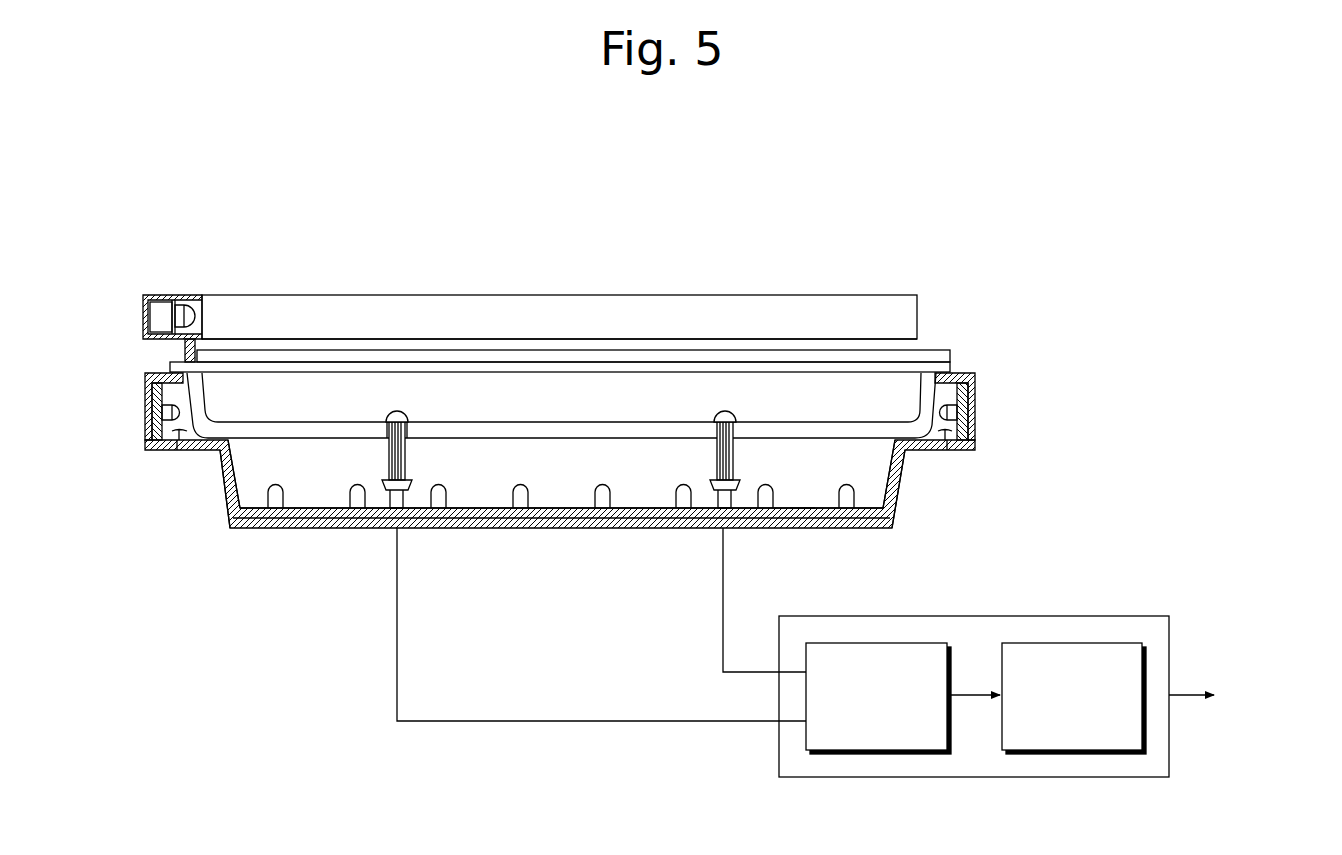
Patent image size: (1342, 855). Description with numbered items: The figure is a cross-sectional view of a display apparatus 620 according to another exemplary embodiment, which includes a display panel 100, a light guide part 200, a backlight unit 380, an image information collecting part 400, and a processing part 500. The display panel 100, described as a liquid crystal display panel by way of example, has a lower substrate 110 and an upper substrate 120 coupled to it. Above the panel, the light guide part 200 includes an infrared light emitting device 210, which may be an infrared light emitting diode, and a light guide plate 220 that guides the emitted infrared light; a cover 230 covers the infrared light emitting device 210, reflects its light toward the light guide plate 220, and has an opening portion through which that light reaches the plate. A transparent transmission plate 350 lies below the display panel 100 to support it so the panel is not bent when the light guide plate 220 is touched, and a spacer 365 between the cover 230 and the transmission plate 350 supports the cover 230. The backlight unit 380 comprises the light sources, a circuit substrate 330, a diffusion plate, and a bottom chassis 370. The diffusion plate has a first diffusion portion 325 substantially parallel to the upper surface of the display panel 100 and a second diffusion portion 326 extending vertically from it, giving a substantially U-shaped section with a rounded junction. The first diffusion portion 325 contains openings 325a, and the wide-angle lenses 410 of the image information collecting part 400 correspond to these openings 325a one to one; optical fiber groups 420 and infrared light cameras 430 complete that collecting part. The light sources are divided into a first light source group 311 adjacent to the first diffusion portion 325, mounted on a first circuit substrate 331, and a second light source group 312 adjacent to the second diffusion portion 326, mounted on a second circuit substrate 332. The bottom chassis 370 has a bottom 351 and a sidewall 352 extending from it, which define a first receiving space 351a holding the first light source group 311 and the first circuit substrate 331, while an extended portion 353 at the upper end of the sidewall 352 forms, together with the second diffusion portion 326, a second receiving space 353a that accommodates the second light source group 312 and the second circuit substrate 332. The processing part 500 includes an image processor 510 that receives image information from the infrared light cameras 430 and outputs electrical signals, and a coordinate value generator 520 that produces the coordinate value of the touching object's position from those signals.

The display panel 100 is at (1073, 305).
The lower substrate 110 is at (945, 357).
The upper substrate 120 is at (912, 347).
The light guide part 200 is at (305, 226).
The infrared light emitting device 210 is at (184, 312).
The light guide plate 220 is at (280, 312).
The cover 230 is at (163, 295).
The first light source group 311 is at (855, 500).
The second light source group 312 is at (165, 412).
The first diffusion portion 325 is at (553, 433).
The openings 325a is at (409, 430).
The second diffusion portion 326 is at (200, 395).
The circuit substrate 330 is at (1073, 392).
The first circuit substrate 331 is at (886, 515).
The second circuit substrate 332 is at (156, 395).
The transmission plate 350 is at (945, 368).
The bottom 351 is at (262, 528).
The first receiving space 351a is at (802, 480).
The sidewall 352 is at (224, 490).
The extended portion 353 is at (158, 431).
The second receiving space 353a is at (177, 442).
The spacer 365 is at (186, 348).
The bottom chassis 370 is at (58, 433).
The backlight unit 380 is at (1130, 365).
The image information collecting part 400 is at (383, 612).
The wide-angle lenses 410 is at (385, 413).
The optical fiber groups 420 is at (387, 453).
The infrared light cameras 430 is at (382, 484).
The processing part 500 is at (1112, 616).
The image processor 510 is at (912, 754).
The coordinate value generator 520 is at (1105, 754).
The display apparatus 620 is at (952, 226).